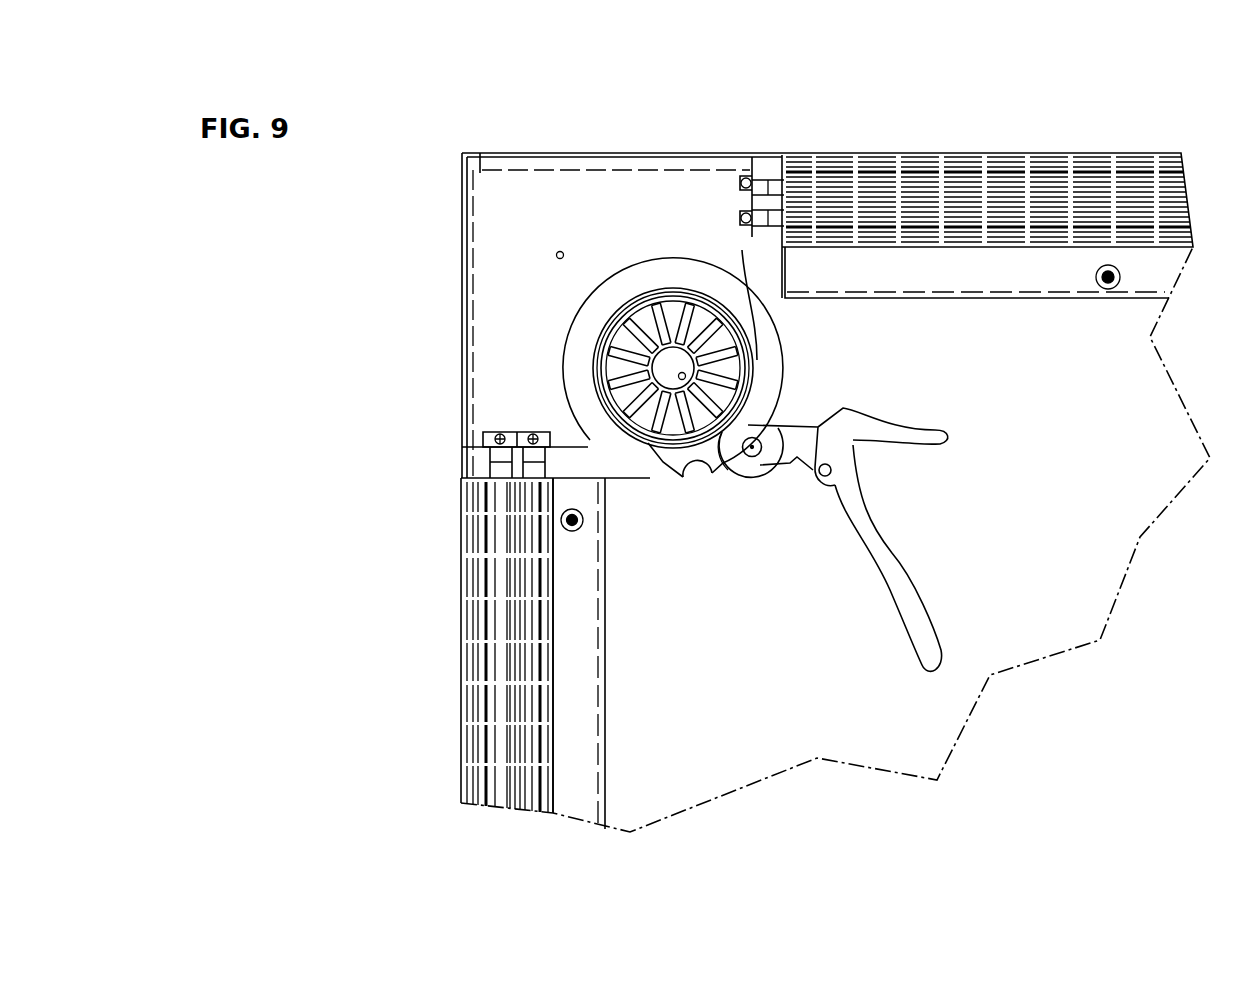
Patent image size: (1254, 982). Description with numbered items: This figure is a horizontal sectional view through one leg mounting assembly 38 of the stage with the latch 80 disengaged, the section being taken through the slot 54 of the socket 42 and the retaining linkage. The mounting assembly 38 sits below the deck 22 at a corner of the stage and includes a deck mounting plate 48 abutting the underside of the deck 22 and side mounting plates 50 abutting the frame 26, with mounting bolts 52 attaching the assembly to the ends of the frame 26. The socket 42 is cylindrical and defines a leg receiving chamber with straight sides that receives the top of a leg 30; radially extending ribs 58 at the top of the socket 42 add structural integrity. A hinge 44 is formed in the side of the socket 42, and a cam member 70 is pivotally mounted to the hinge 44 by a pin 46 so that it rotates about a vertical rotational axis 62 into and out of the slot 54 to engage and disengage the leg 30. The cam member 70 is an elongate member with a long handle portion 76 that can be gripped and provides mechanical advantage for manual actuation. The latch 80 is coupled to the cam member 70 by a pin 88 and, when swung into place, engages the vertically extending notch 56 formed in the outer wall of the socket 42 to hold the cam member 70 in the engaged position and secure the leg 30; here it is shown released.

The deck 22 is at (713, 762).
The frame 26 is at (1000, 290).
The leg 30 is at (636, 331).
The leg mounting assembly 38 is at (623, 265).
The socket 42 is at (643, 273).
The hinge 44 is at (773, 437).
The pin 46 is at (757, 452).
The deck mounting plate 48 is at (533, 229).
The side mounting plates 50 is at (764, 152).
The mounting bolts 52 is at (740, 214).
The slot 54 is at (695, 470).
The notch 56 is at (783, 348).
The ribs 58 is at (692, 318).
The rotational axis 62 is at (745, 472).
The cam member 70 is at (888, 558).
The handle portion 76 is at (754, 305).
The latch 80 is at (907, 432).
The pin 88 is at (831, 470).